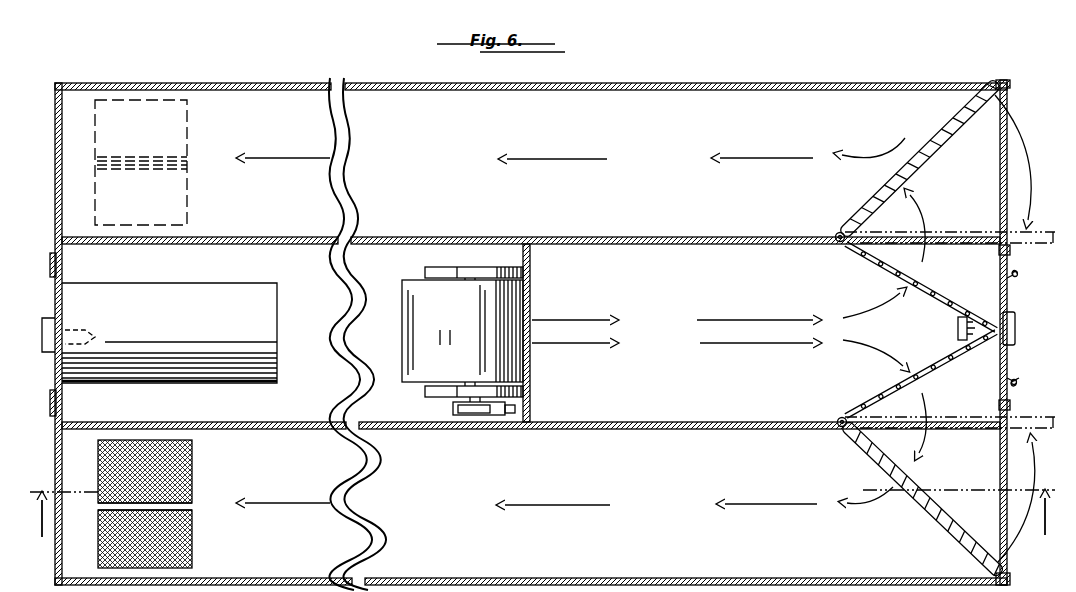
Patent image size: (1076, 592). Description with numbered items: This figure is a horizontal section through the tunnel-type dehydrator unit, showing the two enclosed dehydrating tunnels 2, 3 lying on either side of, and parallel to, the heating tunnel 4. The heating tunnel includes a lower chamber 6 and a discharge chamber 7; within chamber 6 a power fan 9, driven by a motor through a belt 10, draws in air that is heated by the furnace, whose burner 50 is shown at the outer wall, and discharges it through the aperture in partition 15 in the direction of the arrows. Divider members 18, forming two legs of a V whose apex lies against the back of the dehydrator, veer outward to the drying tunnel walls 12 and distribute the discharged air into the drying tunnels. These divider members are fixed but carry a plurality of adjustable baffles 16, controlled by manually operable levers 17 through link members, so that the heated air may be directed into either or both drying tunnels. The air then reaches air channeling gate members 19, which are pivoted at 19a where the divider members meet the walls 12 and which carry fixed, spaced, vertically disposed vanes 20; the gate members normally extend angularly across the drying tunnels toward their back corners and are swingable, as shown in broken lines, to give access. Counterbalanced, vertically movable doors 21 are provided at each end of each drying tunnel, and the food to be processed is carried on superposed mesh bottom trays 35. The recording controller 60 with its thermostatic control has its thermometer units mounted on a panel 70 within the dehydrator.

The dehydrating tunnel 2 is at (658, 500).
The dehydrating tunnel 3 is at (666, 171).
The heating tunnel 4 is at (662, 315).
The lower chamber 6 is at (318, 344).
The discharge chamber 7 is at (650, 395).
The power fan 9 is at (425, 318).
The belt 10 is at (515, 410).
The drying tunnel walls 12 is at (747, 244).
The partition 15 is at (530, 365).
The adjustable baffles 16 is at (892, 268).
The manually operable levers 17 is at (1018, 278).
The divider members 18 is at (977, 288).
The air channeling gate members 19 is at (940, 130).
The pivot 19a is at (838, 234).
The vanes 20 is at (920, 150).
The doors 21 is at (56, 160).
The mesh bottom trays 35 is at (178, 198).
The burner 50 is at (42, 335).
The recording controller 60 is at (1015, 330).
The panel 70 is at (957, 331).